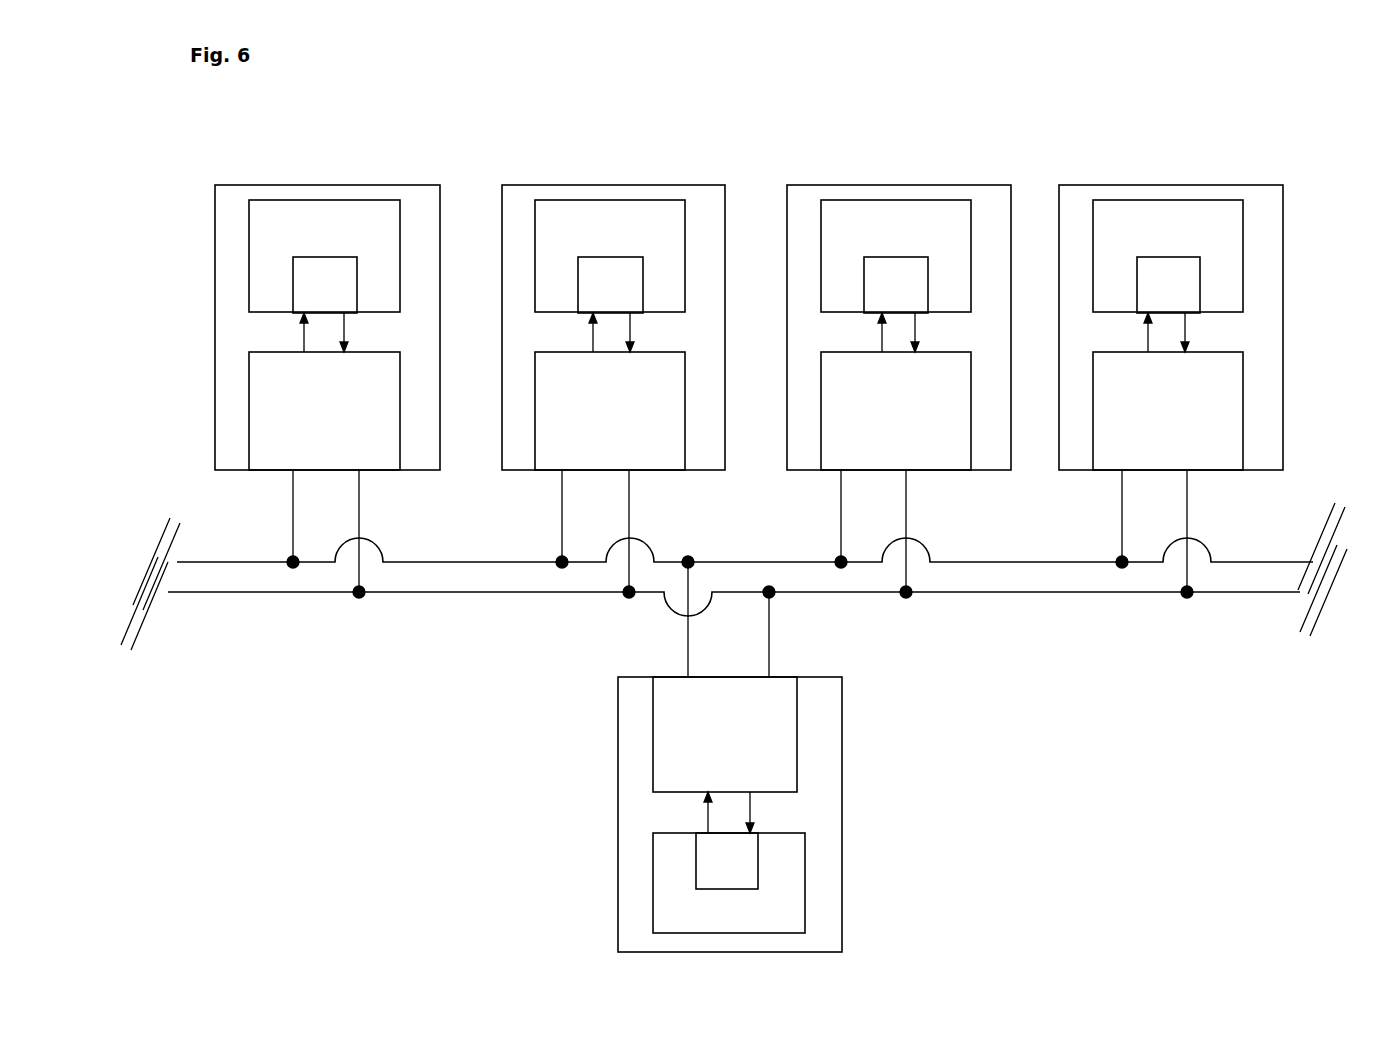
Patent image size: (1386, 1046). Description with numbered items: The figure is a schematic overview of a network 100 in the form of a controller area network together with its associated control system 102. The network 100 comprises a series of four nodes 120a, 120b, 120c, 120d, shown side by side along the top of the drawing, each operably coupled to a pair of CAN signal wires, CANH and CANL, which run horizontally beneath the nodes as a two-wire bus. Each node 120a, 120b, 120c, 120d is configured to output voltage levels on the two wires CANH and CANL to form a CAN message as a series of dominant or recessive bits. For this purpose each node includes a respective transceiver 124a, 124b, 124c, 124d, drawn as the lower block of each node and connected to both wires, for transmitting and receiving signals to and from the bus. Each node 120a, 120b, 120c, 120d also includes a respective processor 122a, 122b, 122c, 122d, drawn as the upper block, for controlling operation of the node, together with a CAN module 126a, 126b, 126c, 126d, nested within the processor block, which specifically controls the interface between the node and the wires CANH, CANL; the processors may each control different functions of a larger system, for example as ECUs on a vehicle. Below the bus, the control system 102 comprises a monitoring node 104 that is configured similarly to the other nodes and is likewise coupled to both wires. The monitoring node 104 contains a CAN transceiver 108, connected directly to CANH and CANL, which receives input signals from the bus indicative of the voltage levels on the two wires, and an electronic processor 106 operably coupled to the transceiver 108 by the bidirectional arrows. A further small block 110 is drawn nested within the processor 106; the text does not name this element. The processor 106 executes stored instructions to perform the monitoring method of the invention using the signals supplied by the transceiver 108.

The network 100 is at (1097, 662).
The control system 102 is at (689, 754).
The monitoring node 104 is at (842, 935).
The electronic processor 106 is at (805, 852).
The CAN transceiver 108 is at (797, 727).
The controller memory 110 is at (696, 854).
The node 120a is at (355, 364).
The node 120b is at (640, 363).
The node 120c is at (919, 364).
The node 120d is at (1210, 363).
The processor 122a is at (400, 250).
The processor 122b is at (685, 280).
The processor 122c is at (928, 290).
The processor 122d is at (1243, 260).
The transceiver 124a is at (400, 425).
The transceiver 124b is at (655, 455).
The transceiver 124c is at (955, 465).
The transceiver 124d is at (1243, 435).
The CAN module 126a is at (357, 297).
The CAN module 126b is at (643, 310).
The CAN module 126c is at (955, 312).
The CAN module 126d is at (1190, 305).
The CAN high wire CANH is at (228, 562).
The CAN low wire CANL is at (215, 593).